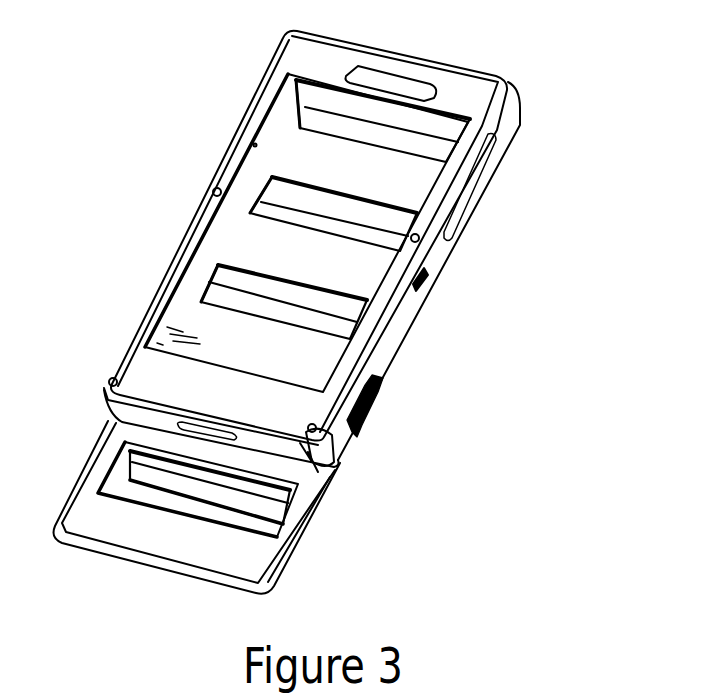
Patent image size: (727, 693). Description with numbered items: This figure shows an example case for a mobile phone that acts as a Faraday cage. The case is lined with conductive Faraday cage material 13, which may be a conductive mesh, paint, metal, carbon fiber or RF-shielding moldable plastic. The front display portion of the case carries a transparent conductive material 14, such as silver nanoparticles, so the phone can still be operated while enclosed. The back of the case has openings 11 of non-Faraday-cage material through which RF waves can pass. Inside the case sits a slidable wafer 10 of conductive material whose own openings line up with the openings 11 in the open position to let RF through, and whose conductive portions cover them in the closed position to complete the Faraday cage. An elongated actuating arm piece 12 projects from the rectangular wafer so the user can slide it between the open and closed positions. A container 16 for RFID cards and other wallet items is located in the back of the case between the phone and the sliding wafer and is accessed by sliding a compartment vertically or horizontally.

The slidable wafer 10 is at (393, 131).
The openings 11 is at (374, 214).
The elongated actuating arm piece 12 is at (371, 402).
The conductive Faraday cage material 13 is at (284, 51).
The transparent conductive material 14 is at (162, 327).
The container 16 is at (281, 496).